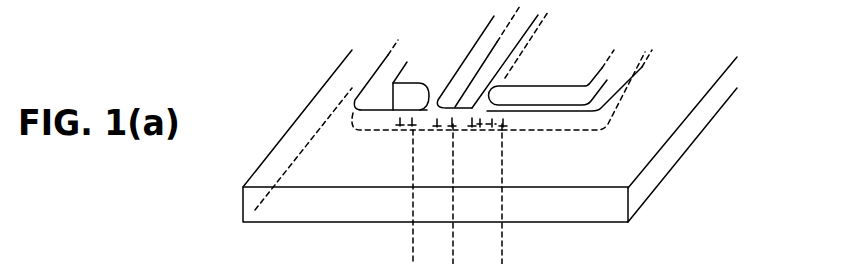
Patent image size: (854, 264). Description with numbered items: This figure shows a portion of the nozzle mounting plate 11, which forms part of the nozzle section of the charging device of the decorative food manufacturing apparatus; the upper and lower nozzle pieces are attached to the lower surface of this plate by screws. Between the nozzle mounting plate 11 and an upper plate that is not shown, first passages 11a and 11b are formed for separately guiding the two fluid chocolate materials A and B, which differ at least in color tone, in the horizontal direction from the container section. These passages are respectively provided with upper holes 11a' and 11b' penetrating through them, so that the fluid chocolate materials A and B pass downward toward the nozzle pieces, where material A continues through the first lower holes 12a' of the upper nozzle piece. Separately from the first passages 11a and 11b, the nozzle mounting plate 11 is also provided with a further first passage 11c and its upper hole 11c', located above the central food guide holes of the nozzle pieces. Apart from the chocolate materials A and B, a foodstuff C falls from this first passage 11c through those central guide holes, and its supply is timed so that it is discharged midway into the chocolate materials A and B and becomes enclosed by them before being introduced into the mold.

The nozzle mounting plate 11 is at (673, 181).
The first passage 11a is at (569, 79).
The first passage 11b is at (403, 75).
The first passage 11c is at (484, 57).
The upper hole 11a' is at (561, 108).
The upper hole 11b' is at (392, 139).
The upper hole 11c' is at (475, 152).
The fluid chocolate material A is at (507, 251).
The fluid chocolate material B is at (411, 234).
The foodstuff C is at (459, 260).
The first lower holes 12a' is at (387, 258).